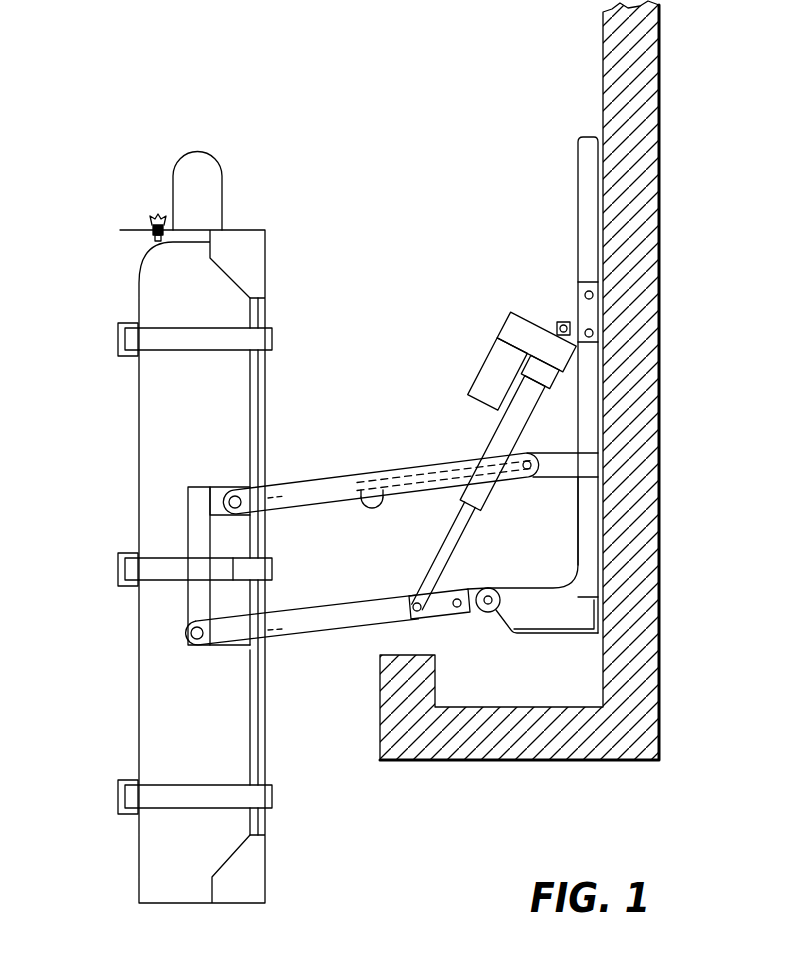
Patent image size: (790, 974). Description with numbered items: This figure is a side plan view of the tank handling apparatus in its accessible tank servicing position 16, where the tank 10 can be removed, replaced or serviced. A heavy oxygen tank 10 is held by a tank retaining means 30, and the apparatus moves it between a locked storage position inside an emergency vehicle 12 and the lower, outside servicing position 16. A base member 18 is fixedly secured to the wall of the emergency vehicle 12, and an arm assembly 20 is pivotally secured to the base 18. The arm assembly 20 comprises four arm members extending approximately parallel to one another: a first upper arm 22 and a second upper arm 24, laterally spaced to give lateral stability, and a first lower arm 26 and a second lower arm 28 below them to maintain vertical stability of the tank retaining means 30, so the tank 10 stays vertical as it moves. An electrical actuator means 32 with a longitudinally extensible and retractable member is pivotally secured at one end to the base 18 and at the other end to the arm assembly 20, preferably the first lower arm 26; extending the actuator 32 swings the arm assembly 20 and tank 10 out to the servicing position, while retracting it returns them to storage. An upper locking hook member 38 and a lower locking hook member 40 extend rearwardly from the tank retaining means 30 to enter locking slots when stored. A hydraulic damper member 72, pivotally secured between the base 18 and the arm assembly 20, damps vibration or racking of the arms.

The tank 10 is at (183, 417).
The emergency vehicle 12 is at (642, 122).
The accessible tank servicing position 16 is at (137, 440).
The base member 18 is at (593, 408).
The arm assembly 20 is at (408, 488).
The first upper arm 22 is at (325, 483).
The second upper arm 24 is at (383, 490).
The first lower arm 26 is at (352, 630).
The second lower arm 28 is at (345, 604).
The tank retaining means 30 is at (195, 525).
The electrical actuator means 32 is at (513, 318).
The upper locking hook member 38 is at (283, 505).
The lower locking hook member 40 is at (283, 640).
The hydraulic damper member 72 is at (428, 462).